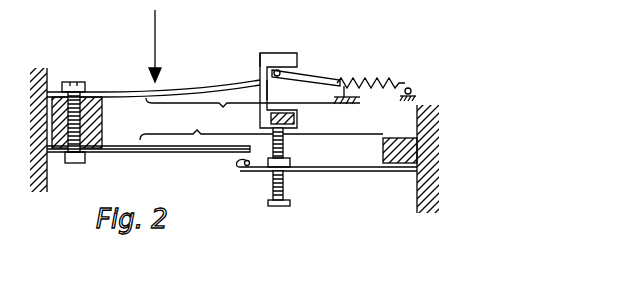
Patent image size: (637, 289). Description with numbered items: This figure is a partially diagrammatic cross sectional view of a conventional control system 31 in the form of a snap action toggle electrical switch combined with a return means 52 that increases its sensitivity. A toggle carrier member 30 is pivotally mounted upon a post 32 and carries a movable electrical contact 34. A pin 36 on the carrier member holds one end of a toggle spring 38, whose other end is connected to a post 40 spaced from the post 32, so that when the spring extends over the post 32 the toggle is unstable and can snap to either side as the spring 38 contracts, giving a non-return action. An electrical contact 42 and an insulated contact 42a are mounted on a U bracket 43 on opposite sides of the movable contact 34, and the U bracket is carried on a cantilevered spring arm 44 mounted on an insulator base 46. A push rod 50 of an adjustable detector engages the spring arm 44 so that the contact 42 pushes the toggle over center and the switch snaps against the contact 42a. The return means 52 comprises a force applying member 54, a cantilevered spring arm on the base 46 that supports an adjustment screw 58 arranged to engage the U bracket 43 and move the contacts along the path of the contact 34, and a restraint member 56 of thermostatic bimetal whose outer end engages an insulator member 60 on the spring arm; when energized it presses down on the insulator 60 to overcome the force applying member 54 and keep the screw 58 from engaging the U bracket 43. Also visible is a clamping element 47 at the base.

The toggle carrier member 30 is at (300, 97).
The control system 31 is at (253, 115).
The post 32 is at (350, 99).
The electrical contact 34 is at (297, 66).
The pin 36 is at (318, 82).
The toggle spring 38 is at (382, 81).
The post 40 is at (411, 88).
The electrical contact 42 is at (283, 66).
The insulated contact 42a is at (297, 125).
The U bracket 43 is at (259, 62).
The cantilevered spring arm 44 is at (220, 68).
The insulator base 46 is at (118, 76).
The clamping bolt 47 is at (83, 163).
The push rod 50 is at (166, 42).
The return means 52 is at (261, 126).
The force applying member 54 is at (358, 172).
The restraint member 56 is at (142, 153).
The adjustment screw 58 is at (282, 206).
The insulator member 60 is at (236, 170).